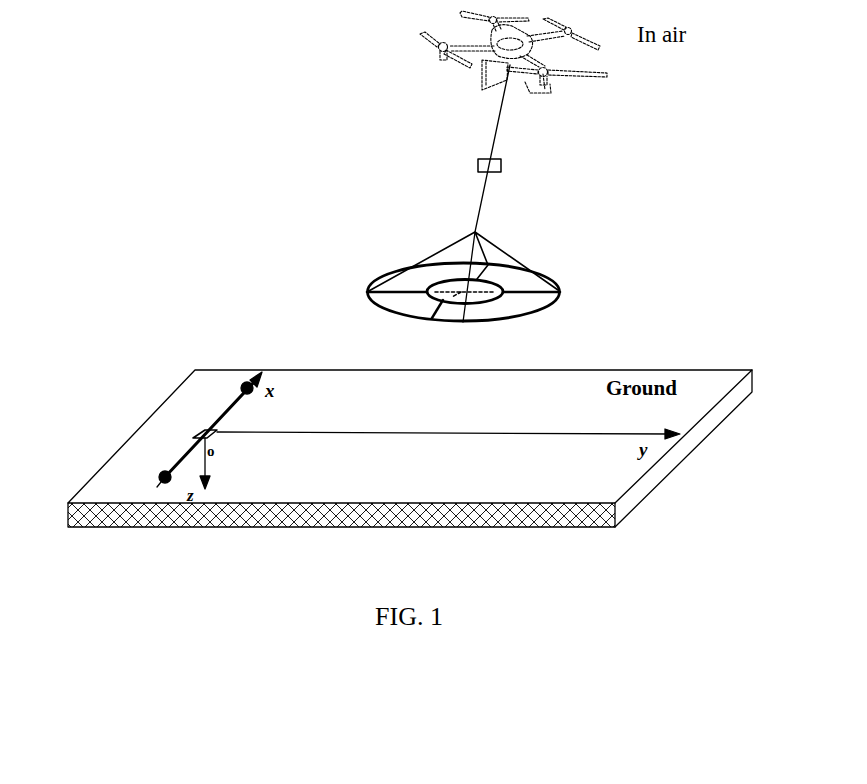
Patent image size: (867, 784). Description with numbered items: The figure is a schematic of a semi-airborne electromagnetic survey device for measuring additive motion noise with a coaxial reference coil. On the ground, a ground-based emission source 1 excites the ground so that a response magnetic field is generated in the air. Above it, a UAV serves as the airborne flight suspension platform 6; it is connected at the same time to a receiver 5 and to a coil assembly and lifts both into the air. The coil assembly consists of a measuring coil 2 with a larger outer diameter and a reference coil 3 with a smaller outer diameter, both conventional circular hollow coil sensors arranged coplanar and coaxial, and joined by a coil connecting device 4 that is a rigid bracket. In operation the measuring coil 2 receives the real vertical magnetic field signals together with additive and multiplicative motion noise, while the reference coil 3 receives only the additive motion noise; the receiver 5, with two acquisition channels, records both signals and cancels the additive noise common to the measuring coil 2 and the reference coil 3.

The ground-based emission source 1 is at (215, 437).
The measuring coil 2 is at (558, 285).
The reference coil 3 is at (428, 295).
The coil connecting device 4 is at (513, 293).
The receiver 5 is at (501, 168).
The airborne flight suspension platform 6 is at (610, 67).